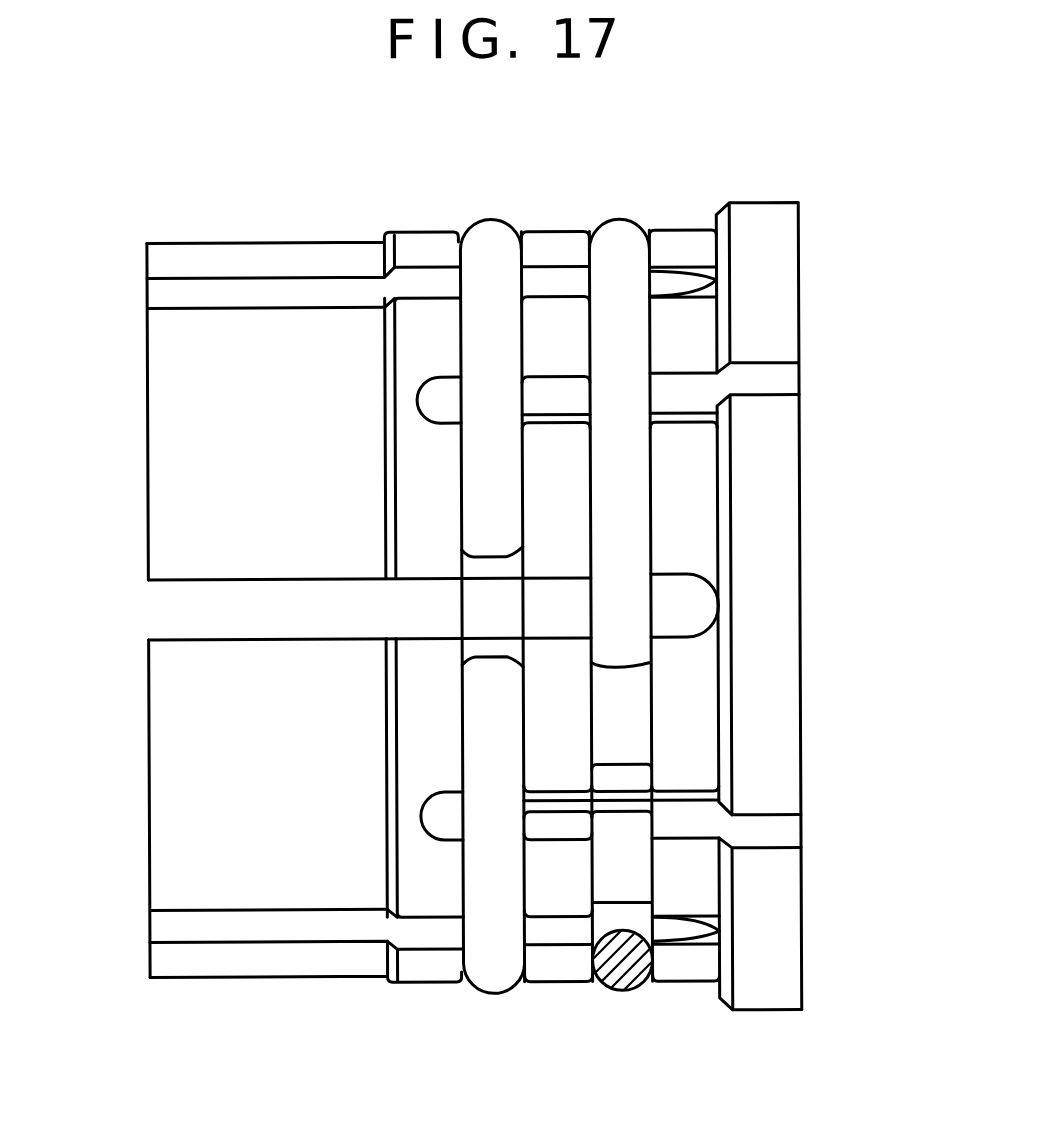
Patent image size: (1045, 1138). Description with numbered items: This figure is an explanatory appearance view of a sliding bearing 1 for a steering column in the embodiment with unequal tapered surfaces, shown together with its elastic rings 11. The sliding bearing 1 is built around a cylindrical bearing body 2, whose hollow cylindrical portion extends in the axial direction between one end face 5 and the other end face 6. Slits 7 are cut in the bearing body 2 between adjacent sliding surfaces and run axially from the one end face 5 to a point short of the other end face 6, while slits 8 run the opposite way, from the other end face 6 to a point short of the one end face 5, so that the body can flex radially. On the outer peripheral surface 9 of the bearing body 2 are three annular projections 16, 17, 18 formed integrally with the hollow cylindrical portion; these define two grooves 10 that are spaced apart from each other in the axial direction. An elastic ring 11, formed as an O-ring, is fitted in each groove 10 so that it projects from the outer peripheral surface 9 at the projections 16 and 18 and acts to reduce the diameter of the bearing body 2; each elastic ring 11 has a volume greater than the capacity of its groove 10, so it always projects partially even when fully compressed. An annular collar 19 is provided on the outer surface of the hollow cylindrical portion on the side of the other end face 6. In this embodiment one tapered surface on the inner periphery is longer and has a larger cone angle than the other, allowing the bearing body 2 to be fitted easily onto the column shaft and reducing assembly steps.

The sliding bearing 1 is at (855, 305).
The bearing body 2 is at (106, 409).
The one end face 5 is at (150, 495).
The other end face 6 is at (801, 578).
The slits 7 is at (420, 286).
The slits 8 is at (683, 398).
The outer peripheral surface 9 is at (413, 366).
The grooves 10 is at (476, 573).
The elastic rings 11 is at (622, 246).
The annular projection 16 is at (420, 737).
The annular projection 17 is at (556, 890).
The annular projection 18 is at (700, 668).
The annular collar 19 is at (776, 517).